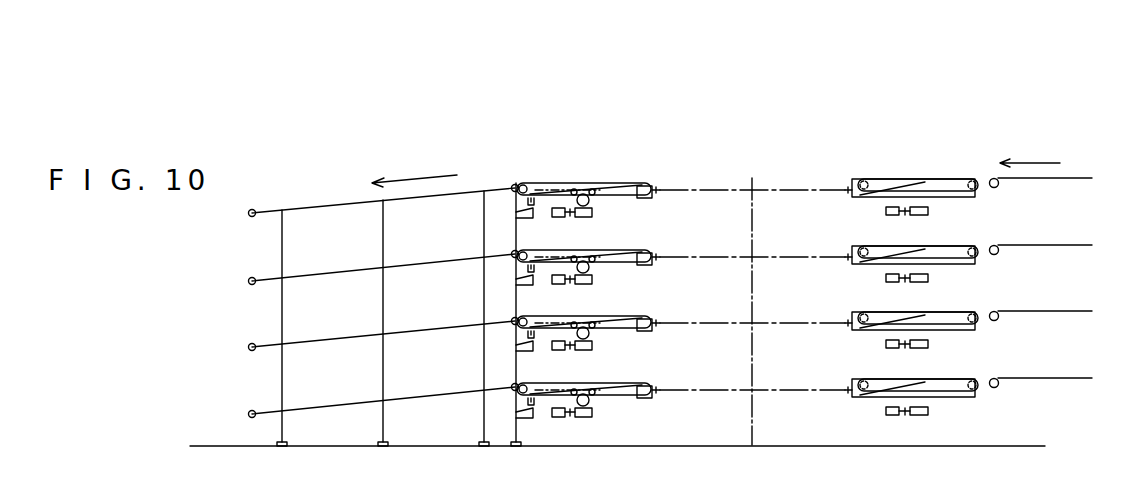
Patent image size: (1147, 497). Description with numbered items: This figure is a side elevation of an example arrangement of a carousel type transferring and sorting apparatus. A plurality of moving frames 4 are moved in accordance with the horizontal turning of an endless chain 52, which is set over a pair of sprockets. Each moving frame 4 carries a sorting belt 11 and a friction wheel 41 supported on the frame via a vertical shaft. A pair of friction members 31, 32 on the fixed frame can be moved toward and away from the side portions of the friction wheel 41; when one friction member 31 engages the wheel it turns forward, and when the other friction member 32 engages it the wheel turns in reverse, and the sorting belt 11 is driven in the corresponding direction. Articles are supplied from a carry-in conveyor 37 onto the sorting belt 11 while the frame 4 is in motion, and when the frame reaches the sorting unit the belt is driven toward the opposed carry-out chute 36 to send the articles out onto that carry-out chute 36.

The moving frame 4 is at (625, 187).
The sorting belt 11 is at (585, 183).
The friction member 31 is at (570, 217).
The friction member 32 is at (905, 215).
The carry-out chute 36 is at (327, 205).
The carry-in conveyor 37 is at (1092, 178).
The friction wheel 41 is at (592, 213).
The endless chain 52 is at (655, 188).